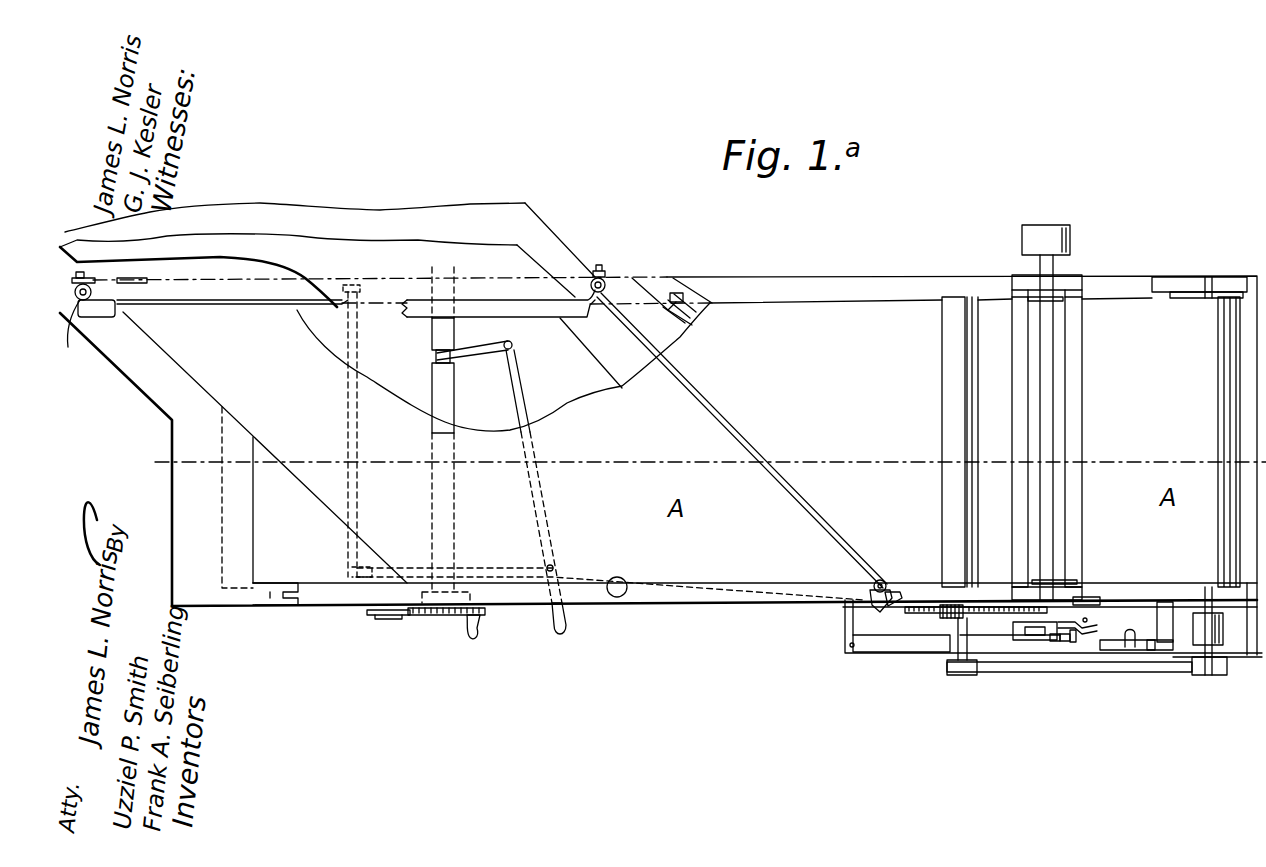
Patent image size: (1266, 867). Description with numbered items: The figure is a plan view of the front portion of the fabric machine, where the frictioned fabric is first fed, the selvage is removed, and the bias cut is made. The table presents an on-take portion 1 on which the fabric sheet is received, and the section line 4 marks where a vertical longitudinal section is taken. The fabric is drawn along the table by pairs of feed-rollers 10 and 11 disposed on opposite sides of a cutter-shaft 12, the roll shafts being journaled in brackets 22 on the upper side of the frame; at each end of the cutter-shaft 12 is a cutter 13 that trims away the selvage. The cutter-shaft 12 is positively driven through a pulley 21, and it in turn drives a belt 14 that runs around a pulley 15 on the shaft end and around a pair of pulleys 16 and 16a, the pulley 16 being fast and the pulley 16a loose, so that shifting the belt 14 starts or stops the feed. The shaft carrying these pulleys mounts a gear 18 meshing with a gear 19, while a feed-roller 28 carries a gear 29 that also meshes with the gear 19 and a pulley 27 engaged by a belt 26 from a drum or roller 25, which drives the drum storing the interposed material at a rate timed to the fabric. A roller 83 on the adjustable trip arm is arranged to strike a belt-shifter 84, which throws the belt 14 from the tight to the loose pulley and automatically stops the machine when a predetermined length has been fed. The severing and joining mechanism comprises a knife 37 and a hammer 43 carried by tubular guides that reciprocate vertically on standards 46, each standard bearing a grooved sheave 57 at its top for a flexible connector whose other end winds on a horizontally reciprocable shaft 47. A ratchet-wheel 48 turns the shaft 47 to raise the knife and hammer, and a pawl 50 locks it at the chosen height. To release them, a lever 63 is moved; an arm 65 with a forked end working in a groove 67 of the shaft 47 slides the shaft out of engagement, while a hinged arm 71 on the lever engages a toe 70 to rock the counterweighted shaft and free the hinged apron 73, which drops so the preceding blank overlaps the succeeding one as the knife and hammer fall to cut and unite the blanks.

The on-take portion 1 is at (847, 280).
The section line 4 4 is at (150, 466).
The feed-roller 10 is at (1077, 497).
The feed-roller 11 is at (977, 533).
The cutter-shaft 12 is at (1047, 445).
The cutter 13 is at (1057, 300).
The belt 14 is at (1062, 641).
The pulley 15 is at (1053, 641).
The pulley 16 is at (1023, 627).
The pulley 16a is at (1033, 640).
The gear 18 is at (1075, 642).
The gear 19 is at (920, 612).
The pulley 21 is at (1047, 233).
The bracket 22 is at (1070, 273).
The drum or roller 25 is at (1223, 660).
The belt 26 is at (990, 673).
The pulley 27 is at (963, 675).
The feed-roller 28 is at (940, 428).
The gear 29 is at (950, 615).
The knife 37 is at (727, 412).
The hammer or fabric-clamping element 43 is at (475, 300).
The standard or pillar 46 is at (893, 565).
The shaft 47 is at (443, 392).
The ratchet-wheel 48 is at (433, 618).
The pawl 50 is at (410, 615).
The grooved sheave 57 is at (88, 278).
The lever 63 is at (520, 395).
The arm 65 is at (504, 340).
The groove 67 is at (435, 357).
The toe or projection 70 is at (357, 573).
The hinged arm 71 is at (473, 567).
The hinged apron 73 is at (227, 297).
The roller 83 is at (1088, 598).
The belt-shifter 84 is at (1090, 627).